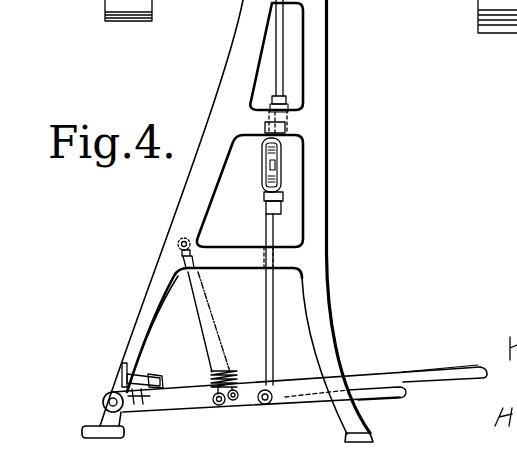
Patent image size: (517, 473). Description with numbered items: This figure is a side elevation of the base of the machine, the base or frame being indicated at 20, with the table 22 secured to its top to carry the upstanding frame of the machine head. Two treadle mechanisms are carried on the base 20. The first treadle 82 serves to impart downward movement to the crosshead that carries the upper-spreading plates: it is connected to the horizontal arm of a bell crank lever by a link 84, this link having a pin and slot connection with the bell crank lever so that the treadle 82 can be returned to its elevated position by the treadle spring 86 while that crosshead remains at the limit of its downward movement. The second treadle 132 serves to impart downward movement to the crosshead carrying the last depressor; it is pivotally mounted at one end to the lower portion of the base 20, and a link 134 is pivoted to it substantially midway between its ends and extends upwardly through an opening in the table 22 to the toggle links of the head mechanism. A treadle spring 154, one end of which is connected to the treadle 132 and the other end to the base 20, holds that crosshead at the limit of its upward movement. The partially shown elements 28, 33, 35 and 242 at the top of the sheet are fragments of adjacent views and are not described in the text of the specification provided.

The base 20 is at (328, 177).
The table 22 is at (318, 0).
The guide block 28 is at (459, 0).
The roller 33 is at (169, 9).
The shaft 35 is at (404, 8).
The slide block 242 is at (104, 5).
The treadle 82 is at (401, 392).
The link 84 is at (264, 232).
The treadle spring 86 is at (211, 373).
The treadle 132 is at (432, 357).
The link 134 is at (276, 215).
The treadle spring 154 is at (238, 374).